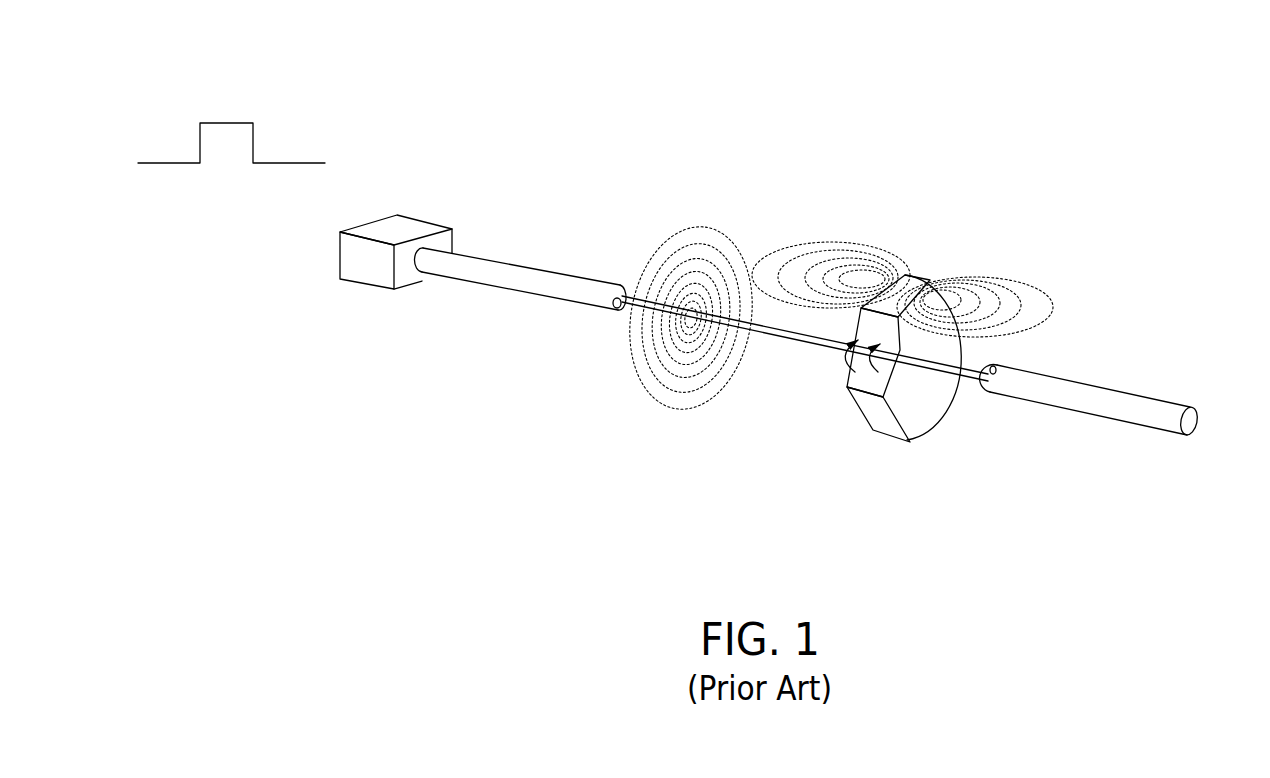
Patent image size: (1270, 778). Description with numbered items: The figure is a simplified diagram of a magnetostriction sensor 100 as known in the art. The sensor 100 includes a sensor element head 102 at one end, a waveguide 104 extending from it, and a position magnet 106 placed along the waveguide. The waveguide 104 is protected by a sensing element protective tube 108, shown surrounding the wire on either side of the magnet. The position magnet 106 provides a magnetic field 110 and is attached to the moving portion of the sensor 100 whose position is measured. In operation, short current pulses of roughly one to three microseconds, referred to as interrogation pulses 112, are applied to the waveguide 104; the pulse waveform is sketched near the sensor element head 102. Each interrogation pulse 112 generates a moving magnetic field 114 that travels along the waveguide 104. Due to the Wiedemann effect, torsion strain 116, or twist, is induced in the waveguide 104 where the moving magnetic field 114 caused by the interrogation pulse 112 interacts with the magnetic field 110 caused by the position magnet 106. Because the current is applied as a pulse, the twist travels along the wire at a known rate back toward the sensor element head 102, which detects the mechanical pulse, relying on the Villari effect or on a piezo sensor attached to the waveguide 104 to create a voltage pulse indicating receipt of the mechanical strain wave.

The magnetostriction sensor 100 is at (935, 136).
The sensor element head 102 is at (352, 263).
The waveguide 104 is at (781, 355).
The position magnet 106 is at (885, 433).
The sensing element protective tube 108 is at (517, 290).
The magnetic field 110 is at (988, 260).
The interrogation pulse 112 is at (254, 146).
The moving magnetic field 114 is at (650, 226).
The torsion strain 116 is at (914, 349).